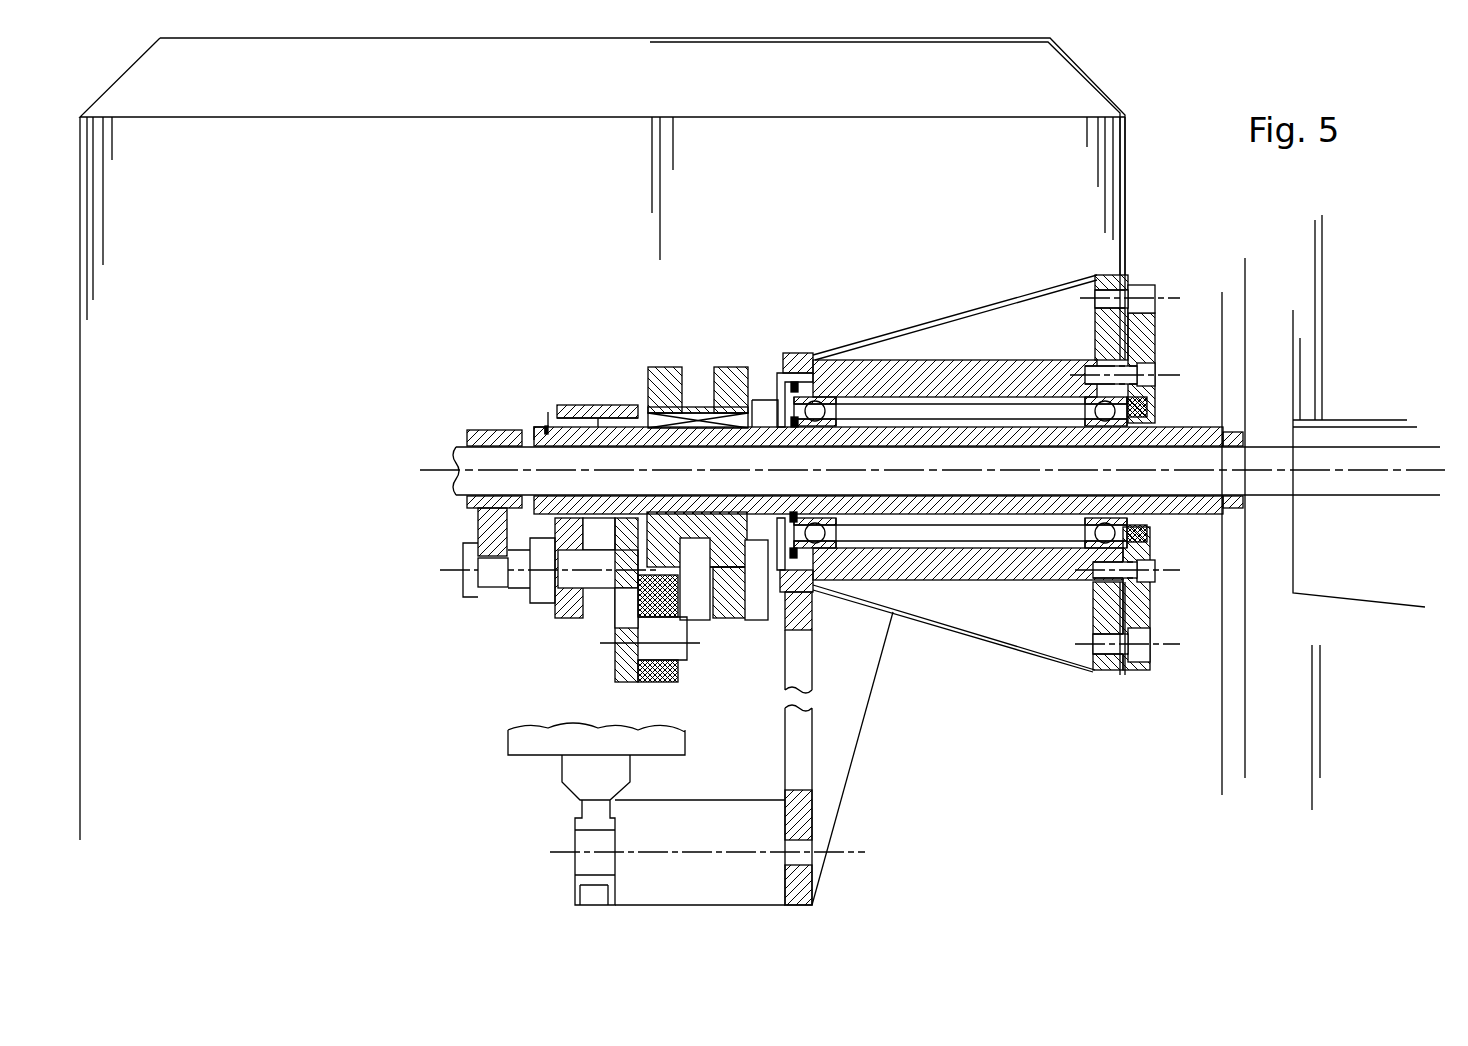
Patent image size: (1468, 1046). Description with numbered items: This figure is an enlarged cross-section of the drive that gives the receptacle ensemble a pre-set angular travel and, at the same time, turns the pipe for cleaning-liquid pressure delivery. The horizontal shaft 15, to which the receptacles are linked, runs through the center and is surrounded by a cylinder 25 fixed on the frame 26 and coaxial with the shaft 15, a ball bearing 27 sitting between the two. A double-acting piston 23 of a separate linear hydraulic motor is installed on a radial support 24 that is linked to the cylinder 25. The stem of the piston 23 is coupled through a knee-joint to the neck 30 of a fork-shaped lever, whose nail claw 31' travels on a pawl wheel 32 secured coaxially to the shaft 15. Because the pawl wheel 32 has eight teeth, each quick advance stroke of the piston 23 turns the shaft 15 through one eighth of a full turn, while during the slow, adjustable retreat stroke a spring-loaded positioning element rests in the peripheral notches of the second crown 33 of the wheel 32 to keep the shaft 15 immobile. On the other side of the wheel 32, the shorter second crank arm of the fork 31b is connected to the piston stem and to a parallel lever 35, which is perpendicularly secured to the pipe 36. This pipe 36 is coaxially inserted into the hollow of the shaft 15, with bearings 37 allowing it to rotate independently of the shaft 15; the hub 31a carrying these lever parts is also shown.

The horizontal shaft 15 is at (1203, 428).
The double-acting piston 23 is at (570, 740).
The radial support 24 is at (805, 762).
The cylinder 25 is at (965, 582).
The frame 26 is at (1126, 220).
The ball bearing 27 is at (796, 398).
The neck 30 is at (593, 580).
The clutch disc 31a is at (627, 683).
The second crank arm of the fork 31b is at (557, 612).
The nail claw 31' is at (686, 628).
The pawl wheel 32 is at (665, 368).
The second crown 33 is at (737, 368).
The parallel lever 35 is at (490, 595).
The pipe 36 is at (509, 458).
The bearings 37 is at (567, 428).